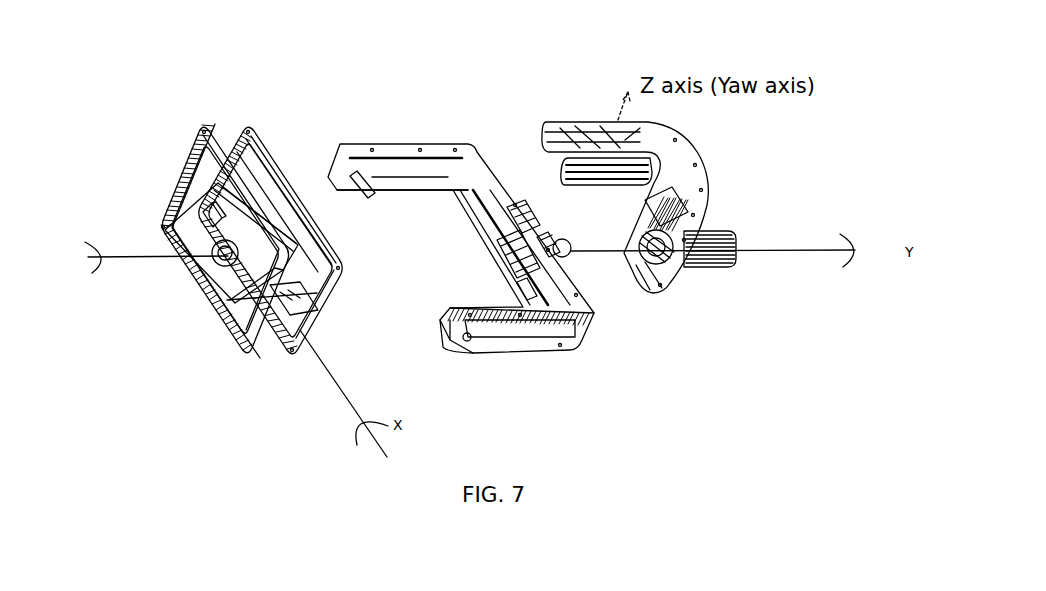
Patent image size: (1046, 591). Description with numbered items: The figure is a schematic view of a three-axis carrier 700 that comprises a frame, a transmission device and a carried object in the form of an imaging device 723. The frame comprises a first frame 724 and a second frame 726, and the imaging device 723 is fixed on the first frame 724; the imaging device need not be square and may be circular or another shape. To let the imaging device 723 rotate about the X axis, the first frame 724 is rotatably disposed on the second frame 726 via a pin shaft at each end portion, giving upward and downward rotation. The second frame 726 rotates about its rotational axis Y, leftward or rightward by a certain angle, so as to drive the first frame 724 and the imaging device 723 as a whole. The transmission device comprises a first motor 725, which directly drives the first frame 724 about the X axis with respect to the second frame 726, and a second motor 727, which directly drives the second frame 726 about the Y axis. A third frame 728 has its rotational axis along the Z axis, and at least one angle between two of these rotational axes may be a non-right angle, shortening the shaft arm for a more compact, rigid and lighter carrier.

The three-axis carrier 700 is at (181, 76).
The imaging device 723 is at (207, 280).
The first frame 724 is at (192, 146).
The first motor 725 is at (237, 310).
The second frame 726 is at (400, 145).
The second motor 727 is at (733, 265).
The third frame 728 is at (703, 191).